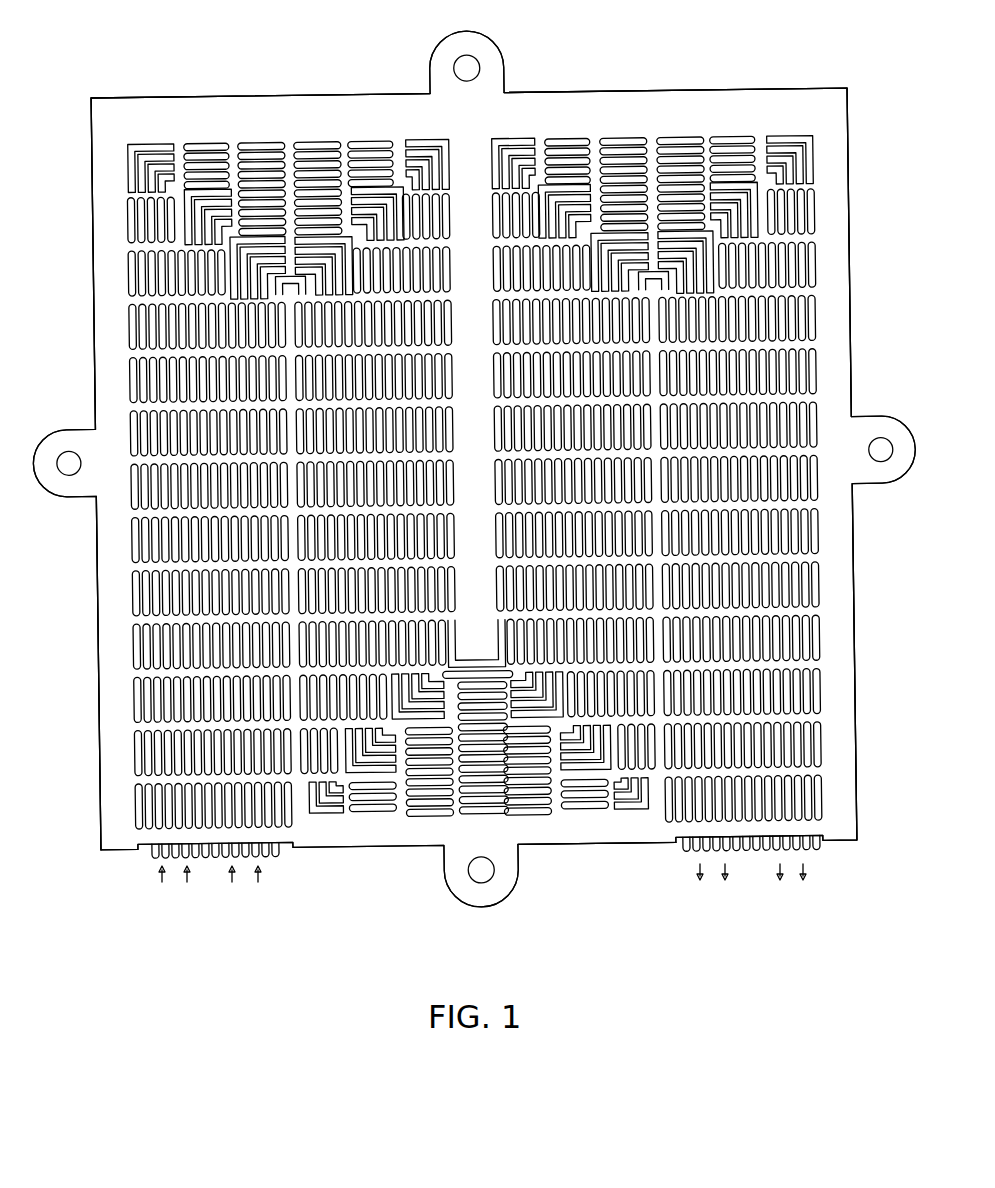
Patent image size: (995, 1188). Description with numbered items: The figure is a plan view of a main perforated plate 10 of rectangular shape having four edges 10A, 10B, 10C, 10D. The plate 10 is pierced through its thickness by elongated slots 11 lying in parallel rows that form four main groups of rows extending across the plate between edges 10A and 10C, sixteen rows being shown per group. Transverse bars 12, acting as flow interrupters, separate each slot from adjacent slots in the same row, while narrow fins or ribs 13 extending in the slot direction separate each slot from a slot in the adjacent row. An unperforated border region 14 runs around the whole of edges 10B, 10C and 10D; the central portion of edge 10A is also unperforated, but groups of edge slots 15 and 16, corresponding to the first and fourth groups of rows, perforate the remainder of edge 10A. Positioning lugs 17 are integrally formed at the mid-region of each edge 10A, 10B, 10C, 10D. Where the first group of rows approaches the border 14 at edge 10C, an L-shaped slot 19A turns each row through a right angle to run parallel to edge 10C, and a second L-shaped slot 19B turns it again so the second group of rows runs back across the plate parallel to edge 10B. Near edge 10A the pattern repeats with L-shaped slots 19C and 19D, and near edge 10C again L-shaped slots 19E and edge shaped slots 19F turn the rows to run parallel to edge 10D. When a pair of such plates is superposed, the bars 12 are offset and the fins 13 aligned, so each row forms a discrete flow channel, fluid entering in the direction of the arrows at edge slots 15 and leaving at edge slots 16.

The main perforated plate 10 is at (866, 385).
The edge 10A is at (588, 846).
The edge 10B is at (93, 591).
The edge 10C is at (313, 92).
The edge 10D is at (852, 640).
The elongated slots 11 is at (812, 275).
The transverse bars 12 is at (134, 303).
The fins 13 is at (790, 183).
The unperforated border region 14 is at (683, 110).
The edge slots 15 is at (158, 858).
The edge slots 16 is at (688, 850).
The positioning lugs 17 is at (484, 47).
The L-shaped slot 19A is at (155, 143).
The second L-shaped slot 19B is at (397, 187).
The L-shaped slots 19C is at (395, 775).
The L-shaped slots 19D is at (568, 762).
The L-shaped slots 19E is at (530, 148).
The edge shaped slots 19F is at (775, 140).